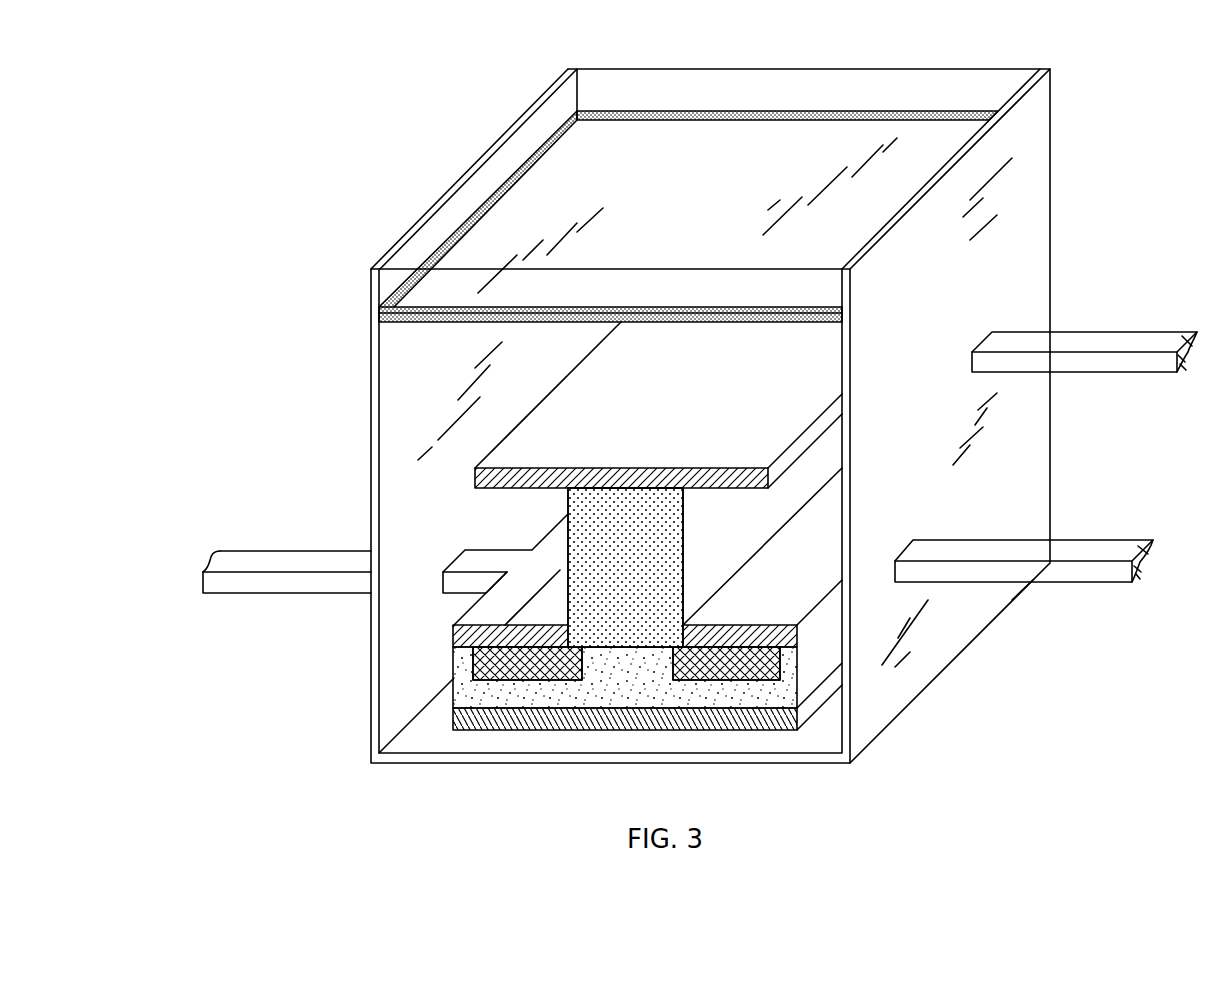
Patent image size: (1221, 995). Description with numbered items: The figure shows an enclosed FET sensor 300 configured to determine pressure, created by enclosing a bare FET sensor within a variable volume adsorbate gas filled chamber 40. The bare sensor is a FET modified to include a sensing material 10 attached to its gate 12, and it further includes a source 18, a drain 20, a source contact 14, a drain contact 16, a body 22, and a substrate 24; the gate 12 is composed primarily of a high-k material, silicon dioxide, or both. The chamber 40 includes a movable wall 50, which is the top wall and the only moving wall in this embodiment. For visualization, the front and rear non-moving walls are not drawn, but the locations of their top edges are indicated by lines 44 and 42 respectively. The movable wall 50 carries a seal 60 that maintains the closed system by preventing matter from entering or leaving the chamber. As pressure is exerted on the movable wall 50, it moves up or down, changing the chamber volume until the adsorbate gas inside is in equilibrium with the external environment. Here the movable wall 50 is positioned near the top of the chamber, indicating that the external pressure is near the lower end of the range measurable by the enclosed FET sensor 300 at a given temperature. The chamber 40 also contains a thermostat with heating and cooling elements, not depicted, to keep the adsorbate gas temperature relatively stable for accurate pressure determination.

The enclosed FET sensor 300 is at (364, 156).
The sensing material 10 is at (822, 353).
The gate 12 is at (585, 538).
The source contact 14 is at (497, 610).
The drain contact 16 is at (976, 545).
The source 18 is at (477, 664).
The drain 20 is at (770, 667).
The body 22 is at (627, 687).
The substrate 24 is at (718, 720).
The variable volume adsorbate gas filled chamber 40 is at (1027, 182).
The line indicating top edge of rear non-moving wall 42 is at (1000, 69).
The line indicating top edge of front non-moving wall 44 is at (475, 270).
The movable wall 50 is at (758, 140).
The seal 60 is at (613, 120).